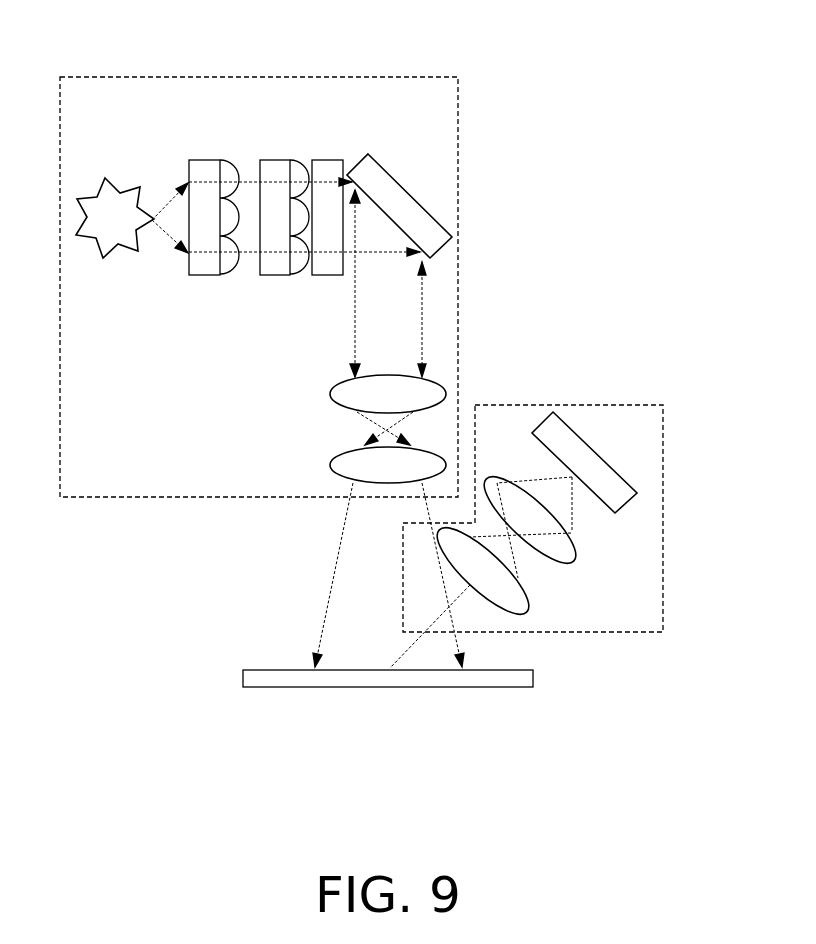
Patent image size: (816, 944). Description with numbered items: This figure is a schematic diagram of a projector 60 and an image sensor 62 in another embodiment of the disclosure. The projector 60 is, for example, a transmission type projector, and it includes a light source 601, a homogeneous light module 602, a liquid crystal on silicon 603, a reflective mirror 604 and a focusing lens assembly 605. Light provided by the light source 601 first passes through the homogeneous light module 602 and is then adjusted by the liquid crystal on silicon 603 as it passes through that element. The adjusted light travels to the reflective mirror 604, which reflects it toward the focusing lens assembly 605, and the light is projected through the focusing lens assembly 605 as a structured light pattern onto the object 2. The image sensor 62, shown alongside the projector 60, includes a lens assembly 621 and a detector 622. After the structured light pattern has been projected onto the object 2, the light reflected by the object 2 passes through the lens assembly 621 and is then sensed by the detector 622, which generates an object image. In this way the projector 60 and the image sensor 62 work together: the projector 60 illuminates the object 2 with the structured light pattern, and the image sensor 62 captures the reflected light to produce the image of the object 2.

The projector 60 is at (92, 76).
The light source 601 is at (115, 178).
The homogeneous light module 602 is at (307, 158).
The liquid crystal on silicon 603 is at (323, 159).
The reflective mirror 604 is at (383, 158).
The focusing lens assembly 605 is at (330, 385).
The image sensor 62 is at (663, 425).
The lens assembly 621 is at (527, 612).
The detector 622 is at (630, 502).
The object 2 is at (503, 688).